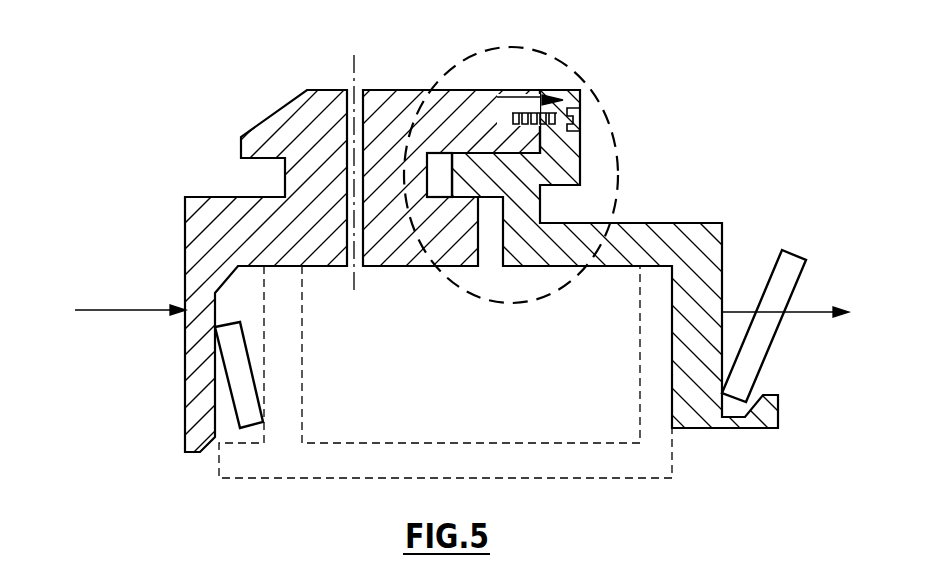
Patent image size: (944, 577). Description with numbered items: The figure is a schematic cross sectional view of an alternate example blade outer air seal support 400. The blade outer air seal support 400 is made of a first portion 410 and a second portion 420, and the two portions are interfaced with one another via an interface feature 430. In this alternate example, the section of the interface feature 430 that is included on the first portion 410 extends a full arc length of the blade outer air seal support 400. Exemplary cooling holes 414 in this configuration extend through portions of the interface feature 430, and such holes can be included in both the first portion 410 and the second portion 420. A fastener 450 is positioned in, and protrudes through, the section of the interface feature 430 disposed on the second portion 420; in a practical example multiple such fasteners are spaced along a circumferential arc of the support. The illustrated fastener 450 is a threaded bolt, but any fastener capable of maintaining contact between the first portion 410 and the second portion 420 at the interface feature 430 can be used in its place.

The blade outer air seal support 400 is at (90, 78).
The first portion 410 is at (236, 212).
The cooling holes 414 is at (362, 90).
The second portion 420 is at (689, 233).
The interface feature 430 is at (537, 52).
The fastener 450 is at (548, 124).